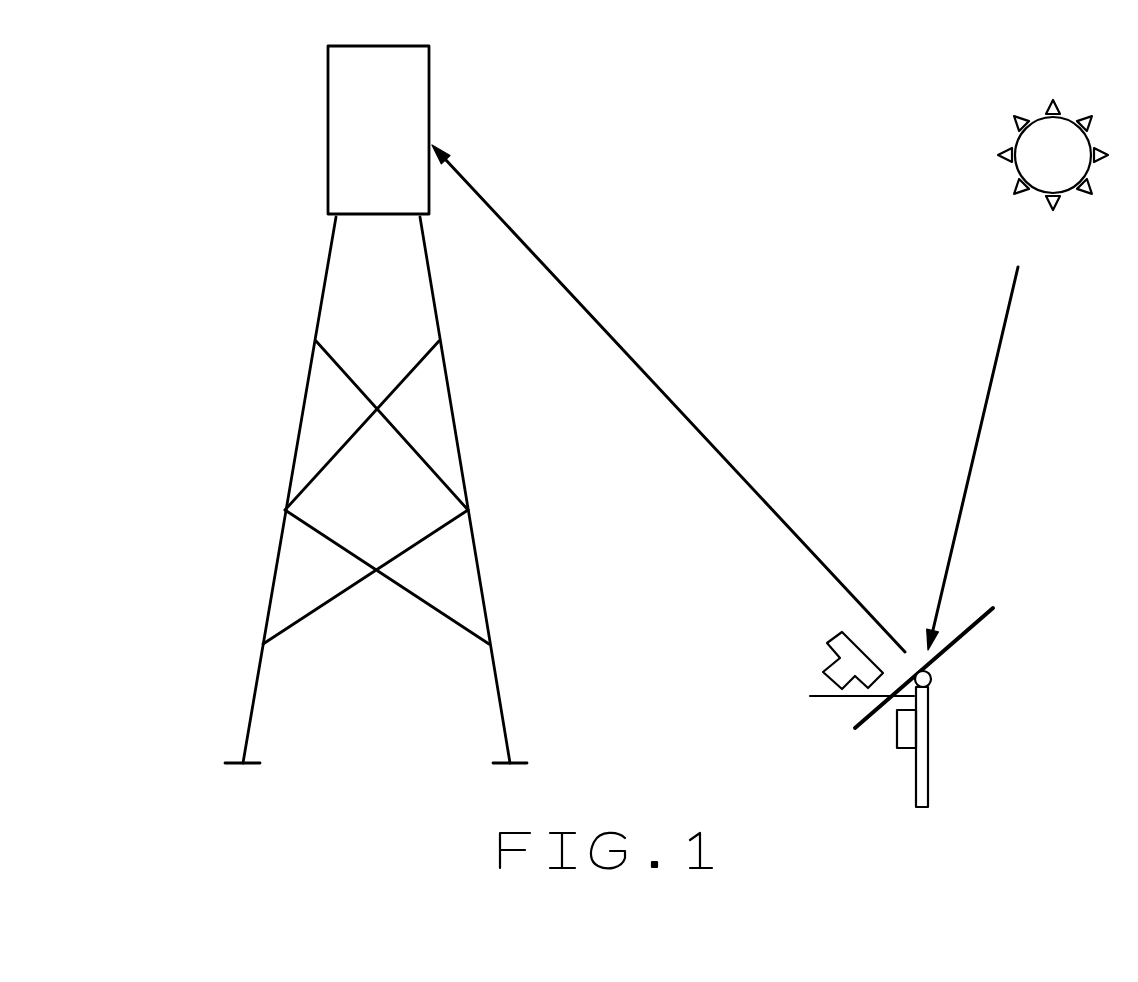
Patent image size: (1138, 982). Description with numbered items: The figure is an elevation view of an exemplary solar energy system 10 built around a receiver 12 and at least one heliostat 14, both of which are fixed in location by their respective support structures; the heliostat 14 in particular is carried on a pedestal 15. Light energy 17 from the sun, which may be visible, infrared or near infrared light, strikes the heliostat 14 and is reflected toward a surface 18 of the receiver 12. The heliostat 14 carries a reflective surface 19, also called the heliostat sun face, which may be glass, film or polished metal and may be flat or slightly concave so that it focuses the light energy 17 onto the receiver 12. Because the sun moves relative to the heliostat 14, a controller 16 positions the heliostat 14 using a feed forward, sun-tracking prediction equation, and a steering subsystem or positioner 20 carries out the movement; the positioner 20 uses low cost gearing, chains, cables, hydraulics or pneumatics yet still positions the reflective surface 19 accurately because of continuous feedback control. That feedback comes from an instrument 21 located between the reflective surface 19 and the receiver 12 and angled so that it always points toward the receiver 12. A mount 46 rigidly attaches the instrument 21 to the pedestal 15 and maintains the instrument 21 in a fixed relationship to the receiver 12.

The solar energy system 10 is at (866, 108).
The receiver 12 is at (300, 129).
The heliostat 14 is at (1030, 627).
The pedestal 15 is at (929, 738).
The controller 16 is at (905, 733).
The light energy 17 is at (540, 258).
The surface 18 is at (431, 105).
The reflective surface 19 is at (979, 610).
The positioner 20 is at (933, 679).
The instrument 21 is at (812, 661).
The mount 46 is at (851, 698).